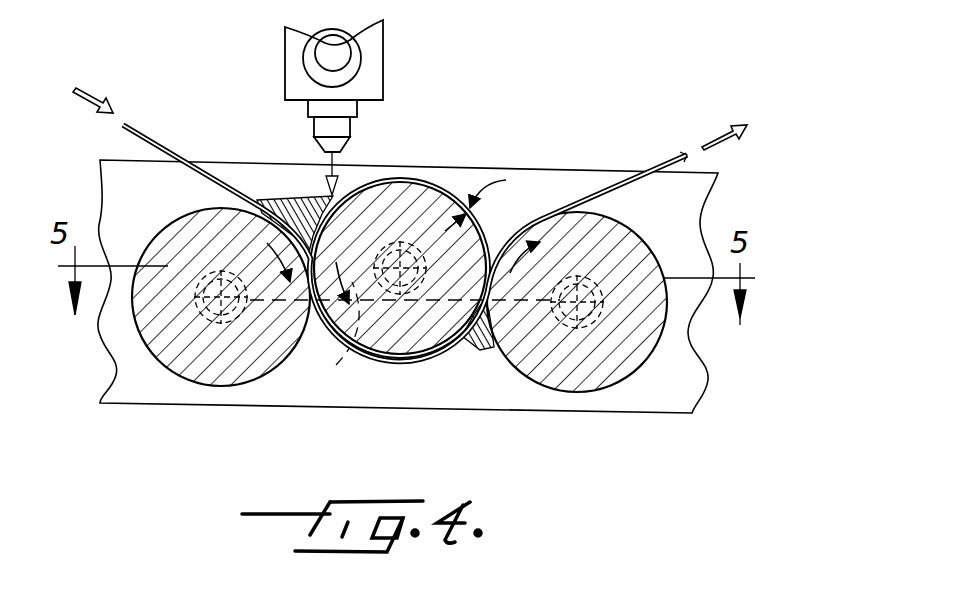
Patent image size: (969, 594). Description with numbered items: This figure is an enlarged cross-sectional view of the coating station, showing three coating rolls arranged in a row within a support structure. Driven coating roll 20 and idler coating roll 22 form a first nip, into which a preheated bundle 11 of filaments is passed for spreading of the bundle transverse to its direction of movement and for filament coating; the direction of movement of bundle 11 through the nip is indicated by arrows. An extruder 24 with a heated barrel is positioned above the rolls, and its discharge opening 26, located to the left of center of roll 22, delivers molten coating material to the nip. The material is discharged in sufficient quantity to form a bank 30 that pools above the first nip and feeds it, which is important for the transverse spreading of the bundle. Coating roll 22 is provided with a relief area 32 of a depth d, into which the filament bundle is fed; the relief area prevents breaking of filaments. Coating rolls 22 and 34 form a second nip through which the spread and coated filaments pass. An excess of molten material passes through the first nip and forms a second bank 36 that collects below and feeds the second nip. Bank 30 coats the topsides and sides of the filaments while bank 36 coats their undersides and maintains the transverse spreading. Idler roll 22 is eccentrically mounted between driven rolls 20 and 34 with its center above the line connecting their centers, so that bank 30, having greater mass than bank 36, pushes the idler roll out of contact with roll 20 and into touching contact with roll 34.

The bundle 11 is at (158, 124).
The coating roll 20 is at (146, 346).
The coating roll 22 is at (446, 196).
The extruder 24 is at (386, 38).
The discharge opening 26 is at (340, 156).
The bank 30 is at (272, 198).
The relief area 32 is at (419, 180).
The coating roll 34 is at (628, 376).
The bank 36 is at (480, 350).
The depth d is at (525, 196).